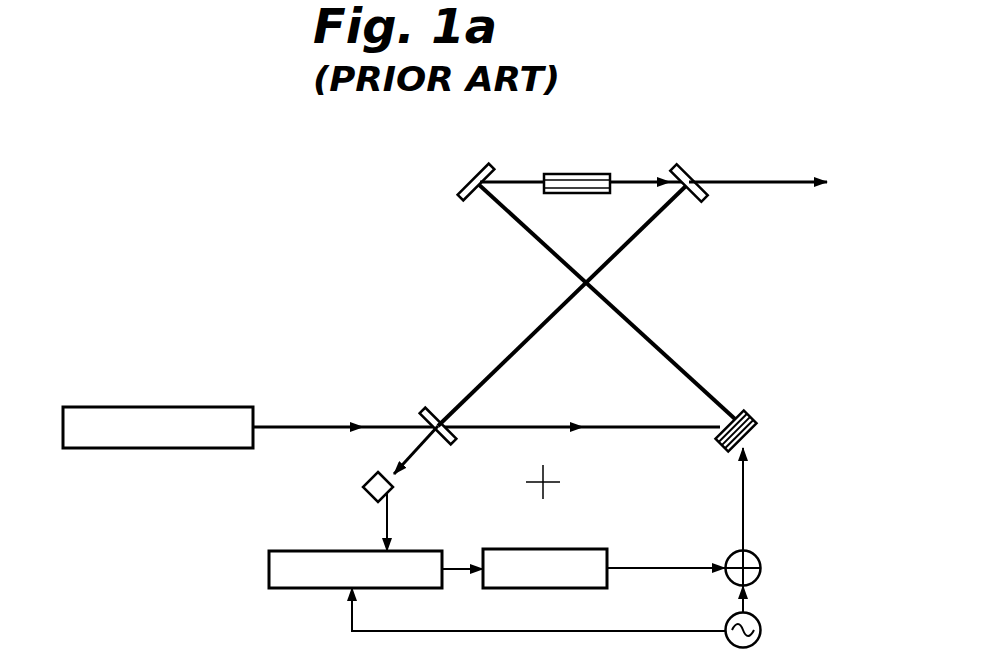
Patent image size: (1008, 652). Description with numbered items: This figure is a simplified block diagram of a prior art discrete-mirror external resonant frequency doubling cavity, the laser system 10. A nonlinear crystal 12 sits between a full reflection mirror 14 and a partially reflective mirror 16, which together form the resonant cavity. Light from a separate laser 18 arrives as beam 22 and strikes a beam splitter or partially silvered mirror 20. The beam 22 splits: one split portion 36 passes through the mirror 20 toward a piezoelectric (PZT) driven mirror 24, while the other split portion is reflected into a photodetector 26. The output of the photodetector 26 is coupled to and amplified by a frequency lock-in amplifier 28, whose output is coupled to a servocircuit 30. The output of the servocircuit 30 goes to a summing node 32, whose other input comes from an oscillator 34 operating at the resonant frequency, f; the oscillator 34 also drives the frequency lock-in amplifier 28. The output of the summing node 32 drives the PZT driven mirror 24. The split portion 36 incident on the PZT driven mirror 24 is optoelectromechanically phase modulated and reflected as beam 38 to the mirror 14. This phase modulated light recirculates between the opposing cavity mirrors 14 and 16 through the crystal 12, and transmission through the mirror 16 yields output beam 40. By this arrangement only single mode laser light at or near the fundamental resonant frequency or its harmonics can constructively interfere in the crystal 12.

The laser system 10 is at (293, 195).
The nonlinear crystal 12 is at (553, 173).
The full reflection mirror 14 is at (472, 174).
The partially reflective mirror 16 is at (686, 170).
The laser 18 is at (184, 407).
The beam splitter 20 is at (428, 410).
The beam 22 is at (290, 427).
The piezoelectric driven mirror 24 is at (757, 425).
The photodetector 26 is at (363, 488).
The frequency lock-in amplifier 28 is at (269, 572).
The servocircuit 30 is at (607, 550).
The summing node 32 is at (760, 560).
The oscillator 34 is at (762, 620).
The split portion 36 is at (548, 424).
The beam 38 is at (623, 320).
The output beam 40 is at (785, 182).